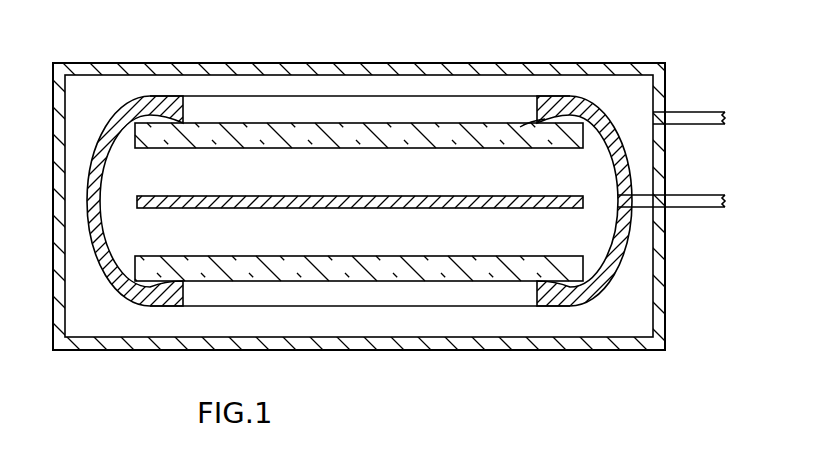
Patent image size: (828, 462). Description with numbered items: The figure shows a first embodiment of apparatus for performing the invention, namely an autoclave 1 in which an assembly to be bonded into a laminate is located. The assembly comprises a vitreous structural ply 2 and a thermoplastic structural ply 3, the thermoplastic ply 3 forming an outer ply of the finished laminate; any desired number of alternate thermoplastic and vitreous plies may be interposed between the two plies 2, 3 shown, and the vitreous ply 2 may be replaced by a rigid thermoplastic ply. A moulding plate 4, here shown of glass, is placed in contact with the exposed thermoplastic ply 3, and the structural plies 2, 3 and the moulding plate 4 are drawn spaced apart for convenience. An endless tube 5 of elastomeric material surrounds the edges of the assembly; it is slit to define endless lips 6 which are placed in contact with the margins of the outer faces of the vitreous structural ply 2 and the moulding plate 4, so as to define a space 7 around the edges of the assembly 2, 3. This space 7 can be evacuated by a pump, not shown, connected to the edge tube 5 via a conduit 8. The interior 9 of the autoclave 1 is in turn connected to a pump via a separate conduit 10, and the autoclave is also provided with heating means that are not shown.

The autoclave 1 is at (662, 297).
The vitreous structural ply 2 is at (491, 268).
The thermoplastic structural ply 3 is at (382, 208).
The moulding plate 4 is at (449, 132).
The endless tube 5 is at (582, 100).
The endless lips 6 is at (519, 127).
The space 7 is at (607, 182).
The conduit 8 is at (680, 202).
The interior 9 is at (629, 87).
The conduit 10 is at (697, 117).